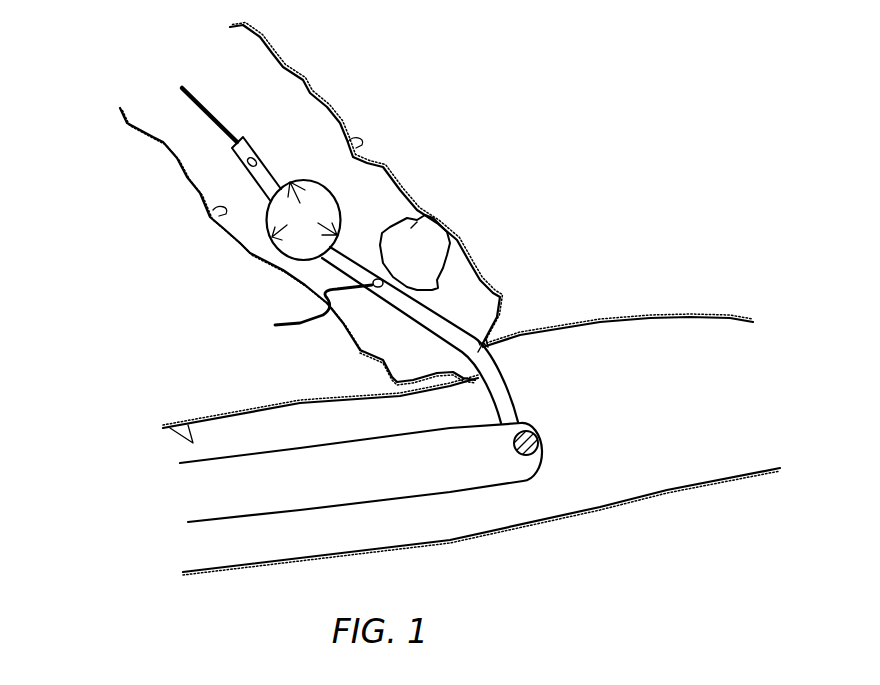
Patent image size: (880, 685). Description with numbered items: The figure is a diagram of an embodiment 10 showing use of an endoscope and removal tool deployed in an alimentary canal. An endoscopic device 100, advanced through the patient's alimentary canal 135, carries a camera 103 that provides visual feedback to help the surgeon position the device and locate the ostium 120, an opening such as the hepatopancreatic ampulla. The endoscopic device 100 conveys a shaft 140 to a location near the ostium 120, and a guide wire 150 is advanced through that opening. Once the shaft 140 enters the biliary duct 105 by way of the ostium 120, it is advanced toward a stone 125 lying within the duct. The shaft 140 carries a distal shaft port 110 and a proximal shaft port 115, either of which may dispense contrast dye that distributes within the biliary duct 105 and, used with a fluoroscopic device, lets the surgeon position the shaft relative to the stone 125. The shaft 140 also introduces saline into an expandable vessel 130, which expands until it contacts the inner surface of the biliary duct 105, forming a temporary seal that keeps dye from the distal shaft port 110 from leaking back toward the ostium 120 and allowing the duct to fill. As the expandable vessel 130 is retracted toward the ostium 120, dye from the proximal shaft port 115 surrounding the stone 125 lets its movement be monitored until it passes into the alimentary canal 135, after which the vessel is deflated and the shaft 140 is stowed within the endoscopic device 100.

The embodiment 10 is at (37, 58).
The endoscopic device 100 is at (240, 468).
The camera 103 is at (525, 457).
The biliary duct 105 is at (162, 147).
The distal shaft port 110 is at (247, 167).
The proximal shaft port 115 is at (306, 308).
The ostium 120 is at (490, 343).
The stone 125 is at (450, 258).
The expandable vessel 130 is at (331, 191).
The alimentary canal 135 is at (663, 343).
The shaft 140 is at (420, 303).
The guide wire 150 is at (217, 110).